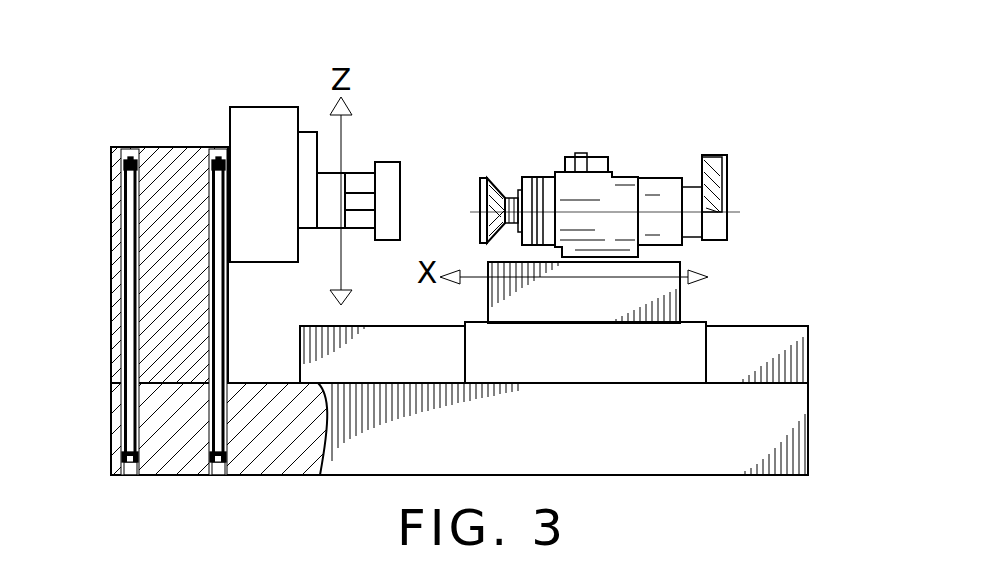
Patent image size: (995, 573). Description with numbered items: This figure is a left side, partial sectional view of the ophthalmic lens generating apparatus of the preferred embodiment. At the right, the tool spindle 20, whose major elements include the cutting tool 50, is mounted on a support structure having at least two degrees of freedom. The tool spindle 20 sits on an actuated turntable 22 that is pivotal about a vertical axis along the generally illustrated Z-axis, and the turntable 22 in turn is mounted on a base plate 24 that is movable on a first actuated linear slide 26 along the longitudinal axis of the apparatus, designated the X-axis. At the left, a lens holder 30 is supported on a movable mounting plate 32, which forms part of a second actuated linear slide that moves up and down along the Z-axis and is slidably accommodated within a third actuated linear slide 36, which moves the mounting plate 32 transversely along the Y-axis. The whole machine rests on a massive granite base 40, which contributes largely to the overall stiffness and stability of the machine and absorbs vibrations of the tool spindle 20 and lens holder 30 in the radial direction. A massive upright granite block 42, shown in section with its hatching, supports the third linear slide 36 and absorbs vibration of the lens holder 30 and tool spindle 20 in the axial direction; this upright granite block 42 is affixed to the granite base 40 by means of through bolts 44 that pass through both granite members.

The tool spindle 20 is at (619, 124).
The actuated turntable 22 is at (683, 293).
The base plate 24 is at (562, 347).
The first actuated linear slide 26 is at (760, 340).
The lens holder 30 is at (402, 177).
The mounting plate 32 is at (307, 130).
The third actuated linear slide 36 is at (263, 115).
The granite base 40 is at (418, 429).
The upright granite block 42 is at (158, 288).
The through bolts 44 is at (134, 147).
The cutting tool 50 is at (492, 180).